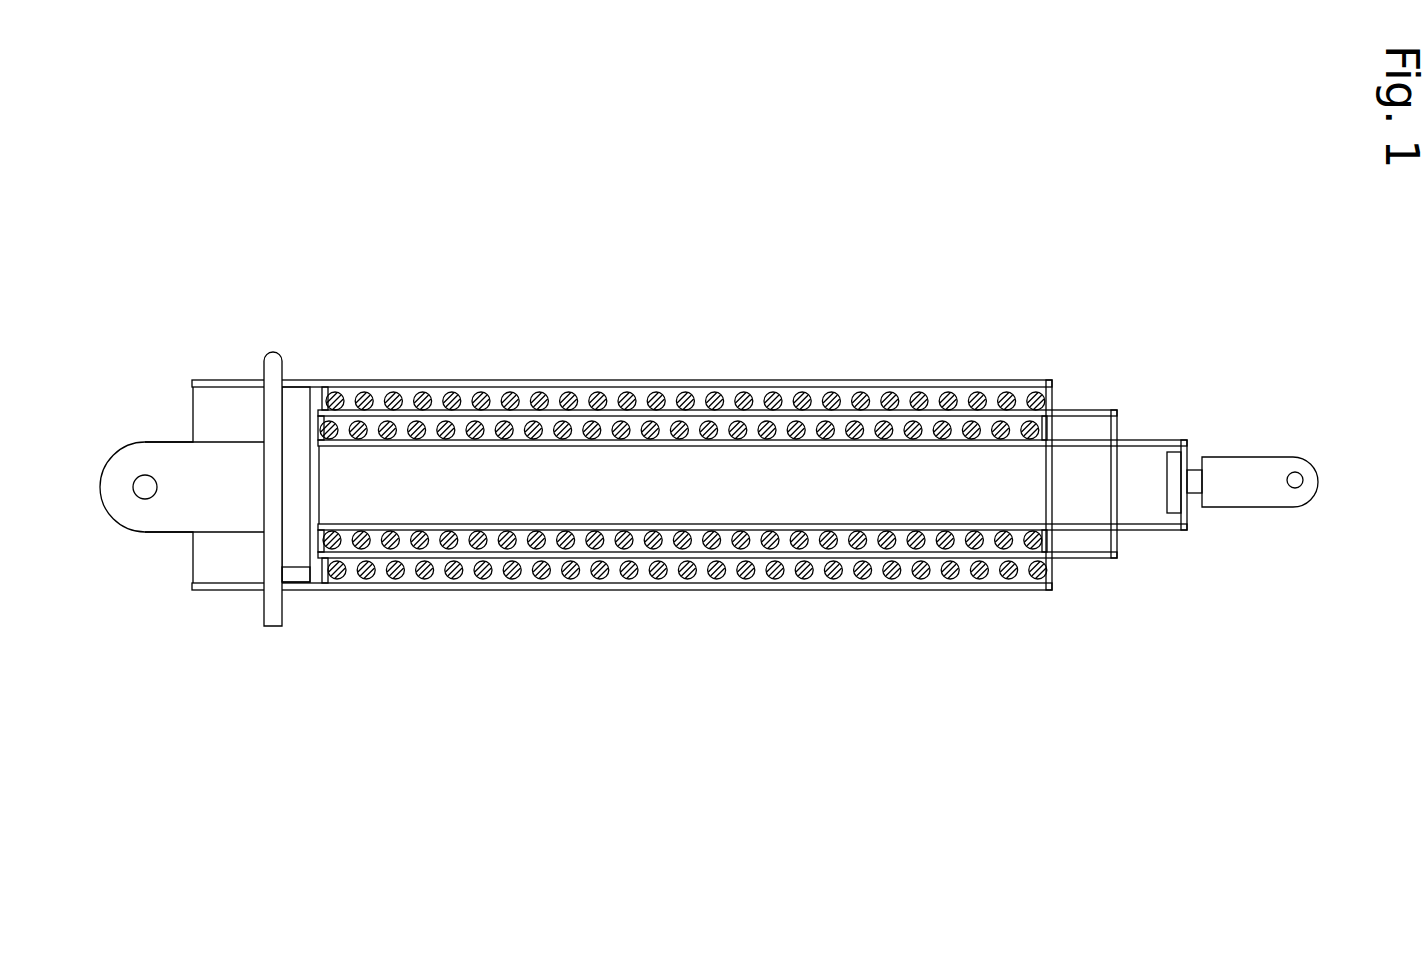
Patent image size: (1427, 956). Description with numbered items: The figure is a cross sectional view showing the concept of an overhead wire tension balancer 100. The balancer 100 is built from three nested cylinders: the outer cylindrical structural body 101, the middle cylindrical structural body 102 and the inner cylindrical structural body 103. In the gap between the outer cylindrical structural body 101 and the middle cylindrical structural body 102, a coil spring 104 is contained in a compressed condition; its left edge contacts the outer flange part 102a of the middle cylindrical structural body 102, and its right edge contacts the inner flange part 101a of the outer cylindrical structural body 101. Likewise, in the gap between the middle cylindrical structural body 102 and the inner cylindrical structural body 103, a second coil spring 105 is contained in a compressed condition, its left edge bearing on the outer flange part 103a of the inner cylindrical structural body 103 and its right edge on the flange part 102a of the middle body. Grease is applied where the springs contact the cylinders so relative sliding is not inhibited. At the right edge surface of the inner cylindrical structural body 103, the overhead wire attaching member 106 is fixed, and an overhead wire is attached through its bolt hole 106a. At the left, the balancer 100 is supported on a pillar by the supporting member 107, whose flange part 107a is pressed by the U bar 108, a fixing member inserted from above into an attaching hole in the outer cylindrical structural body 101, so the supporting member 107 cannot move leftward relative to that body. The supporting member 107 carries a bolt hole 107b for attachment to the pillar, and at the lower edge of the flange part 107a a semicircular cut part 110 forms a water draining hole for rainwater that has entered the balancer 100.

The overhead wire tension balancer 100 is at (546, 335).
The outer cylindrical structural body 101 is at (820, 380).
The inner flange part 101a is at (1052, 380).
The middle cylindrical structural body 102 is at (1072, 410).
The outer flange part 102a is at (313, 392).
The inner cylindrical structural body 103 is at (1158, 440).
The outer flange part 103a is at (316, 432).
The coil spring 104 is at (628, 401).
The coil spring 105 is at (708, 430).
The overhead wire attaching member 106 is at (1270, 495).
The bolt hole 106a is at (1295, 478).
The supporting member 107 is at (148, 458).
The flange part 107a is at (292, 487).
The bolt hole 107b is at (140, 497).
The U bar 108 is at (271, 358).
The cut part 110 is at (302, 575).